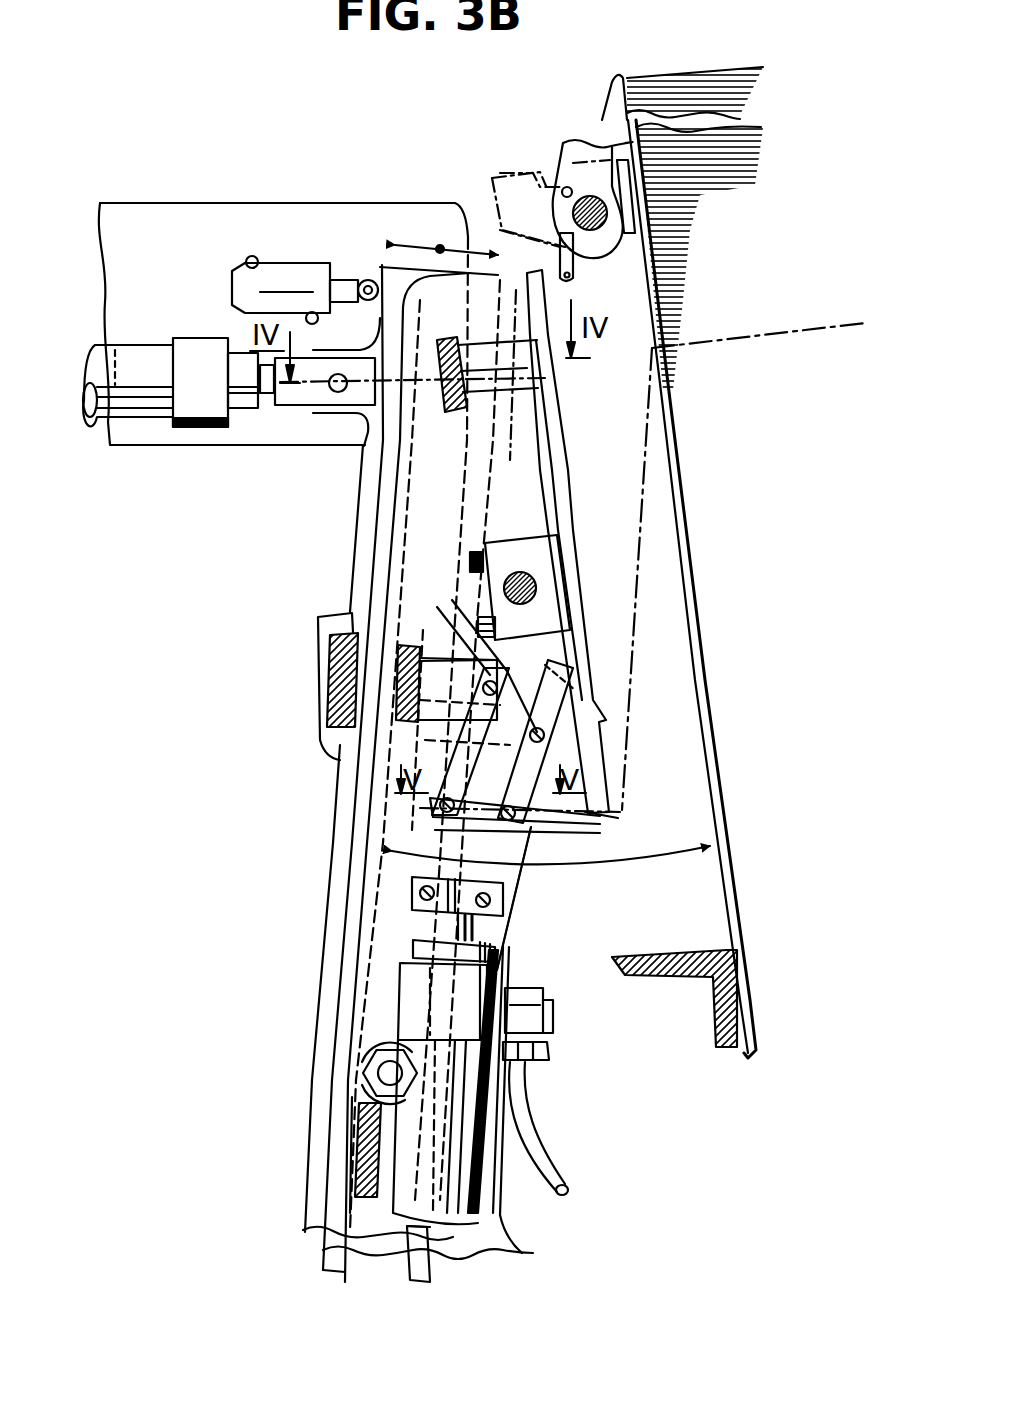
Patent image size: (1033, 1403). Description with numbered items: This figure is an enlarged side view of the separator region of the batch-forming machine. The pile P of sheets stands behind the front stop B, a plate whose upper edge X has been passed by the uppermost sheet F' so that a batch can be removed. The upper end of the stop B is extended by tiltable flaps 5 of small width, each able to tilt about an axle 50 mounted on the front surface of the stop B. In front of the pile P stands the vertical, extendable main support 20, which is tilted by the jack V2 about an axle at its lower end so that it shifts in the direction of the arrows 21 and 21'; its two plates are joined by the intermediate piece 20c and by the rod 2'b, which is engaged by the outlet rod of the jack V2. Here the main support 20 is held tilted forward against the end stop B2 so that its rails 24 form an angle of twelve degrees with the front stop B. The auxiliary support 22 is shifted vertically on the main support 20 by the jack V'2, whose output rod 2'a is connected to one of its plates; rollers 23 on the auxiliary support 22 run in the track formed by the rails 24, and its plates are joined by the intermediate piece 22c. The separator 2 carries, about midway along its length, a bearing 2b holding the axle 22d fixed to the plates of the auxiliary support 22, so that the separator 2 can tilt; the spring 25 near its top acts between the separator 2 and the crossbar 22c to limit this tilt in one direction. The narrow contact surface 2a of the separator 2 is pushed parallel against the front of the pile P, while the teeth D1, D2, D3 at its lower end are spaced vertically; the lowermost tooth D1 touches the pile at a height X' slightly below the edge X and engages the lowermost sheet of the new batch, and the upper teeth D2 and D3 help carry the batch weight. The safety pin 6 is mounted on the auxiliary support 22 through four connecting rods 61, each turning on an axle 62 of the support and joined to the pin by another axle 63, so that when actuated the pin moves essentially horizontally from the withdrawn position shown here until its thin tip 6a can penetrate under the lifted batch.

The separator 2 is at (588, 544).
The contact surface 2a is at (568, 468).
The bearing 2b is at (545, 612).
The output rod 2'a is at (377, 908).
The rod 2'b is at (385, 423).
The tiltable flaps 5 is at (568, 147).
The safety pin 6 is at (505, 933).
The pin tip 6a is at (570, 833).
The main support 20 is at (335, 848).
The intermediate piece 20c is at (338, 672).
The arrow 21 is at (409, 201).
The arrow 21' is at (490, 304).
The auxiliary support 22 is at (505, 932).
The intermediate piece 22c is at (440, 418).
The axle 22d is at (530, 586).
The rollers 23 is at (380, 1052).
The rails 24 is at (345, 960).
The spring 25 is at (548, 409).
The axle 50 is at (600, 201).
The connecting rods 61 is at (527, 757).
The axles 62 is at (462, 615).
The axle 63 is at (430, 803).
The front stop B is at (680, 489).
The end stop B2 is at (305, 232).
The jack V2 is at (275, 291).
The jack V'2 is at (449, 1011).
The lowermost tooth D1 is at (642, 790).
The tooth D2 is at (654, 766).
The tooth D3 is at (640, 726).
The uppermost sheet F' is at (682, 200).
The pile P is at (782, 276).
The upper edge X is at (585, 106).
The height X' is at (734, 566).